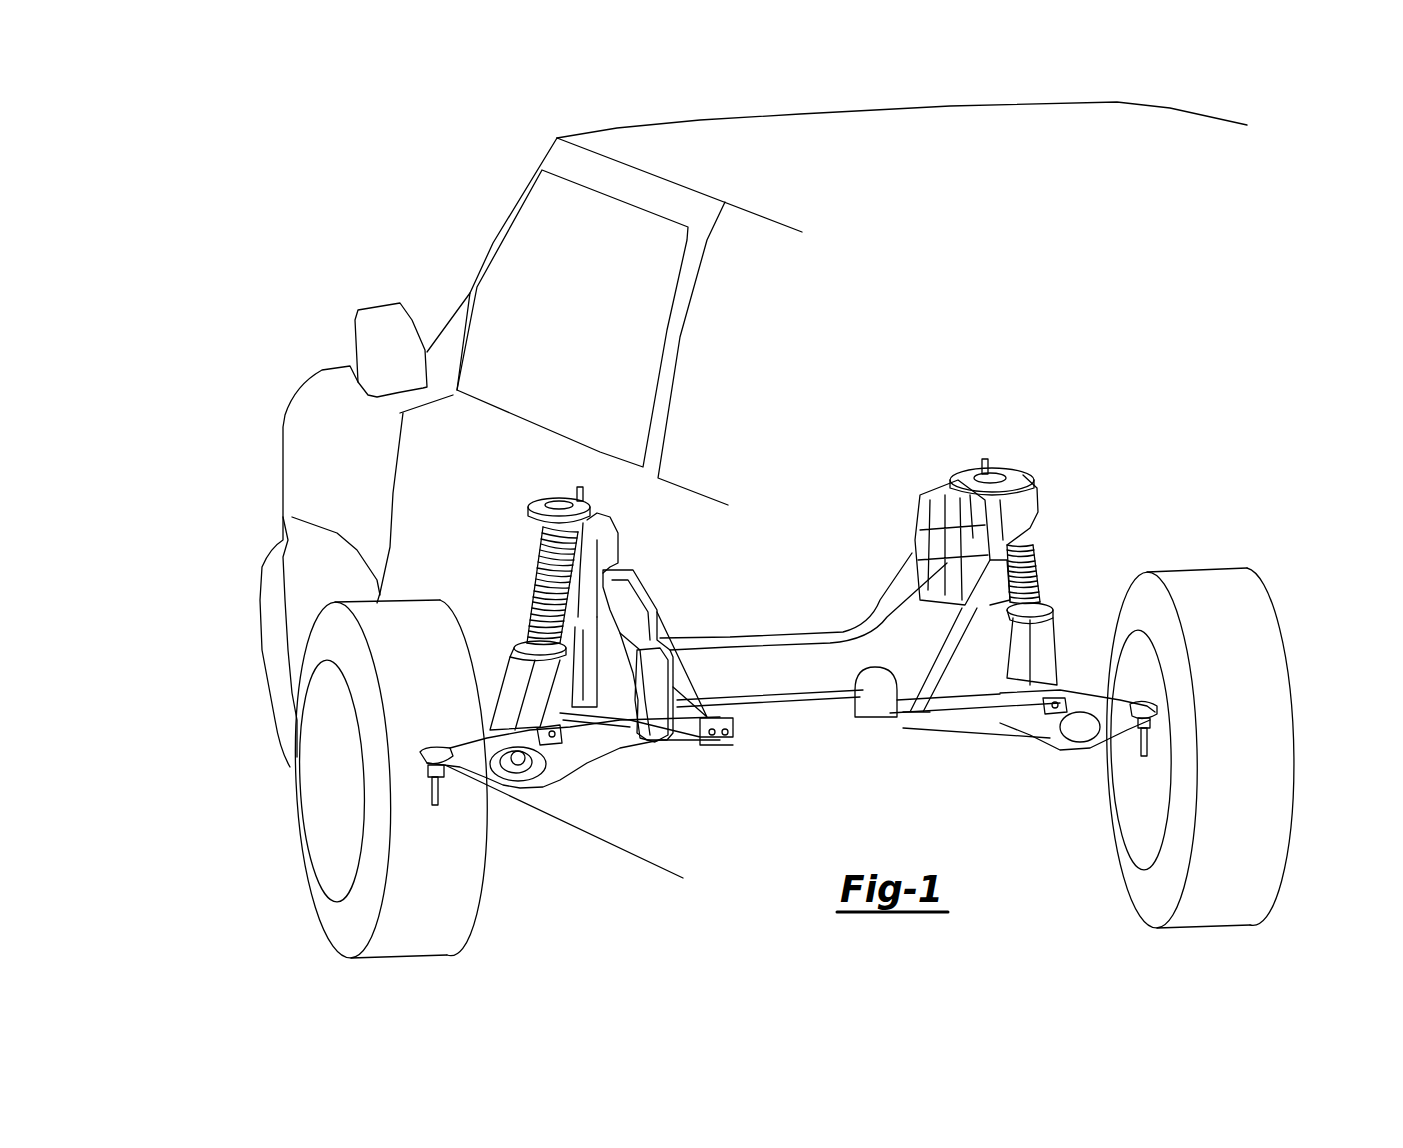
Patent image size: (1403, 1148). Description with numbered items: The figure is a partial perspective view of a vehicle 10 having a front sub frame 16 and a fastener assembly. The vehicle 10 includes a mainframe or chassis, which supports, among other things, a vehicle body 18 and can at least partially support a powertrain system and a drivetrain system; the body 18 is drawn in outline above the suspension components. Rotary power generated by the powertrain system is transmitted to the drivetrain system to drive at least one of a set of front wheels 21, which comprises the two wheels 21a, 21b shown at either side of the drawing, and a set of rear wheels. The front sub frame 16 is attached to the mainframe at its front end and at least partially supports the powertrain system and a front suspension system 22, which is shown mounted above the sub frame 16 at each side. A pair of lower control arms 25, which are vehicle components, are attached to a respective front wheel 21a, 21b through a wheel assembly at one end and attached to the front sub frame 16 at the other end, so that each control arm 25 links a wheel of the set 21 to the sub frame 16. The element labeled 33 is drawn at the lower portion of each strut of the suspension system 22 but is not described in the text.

The vehicle 10 is at (842, 100).
The vehicle body 18 is at (617, 140).
The front sub frame 16 is at (738, 625).
The front suspension system 22 is at (534, 541).
The shock absorber 33 is at (527, 678).
The lower control arm 25 is at (582, 744).
The set of front wheels 21 is at (785, 764).
The front wheel 21a is at (320, 908).
The front wheel 21b is at (1262, 660).